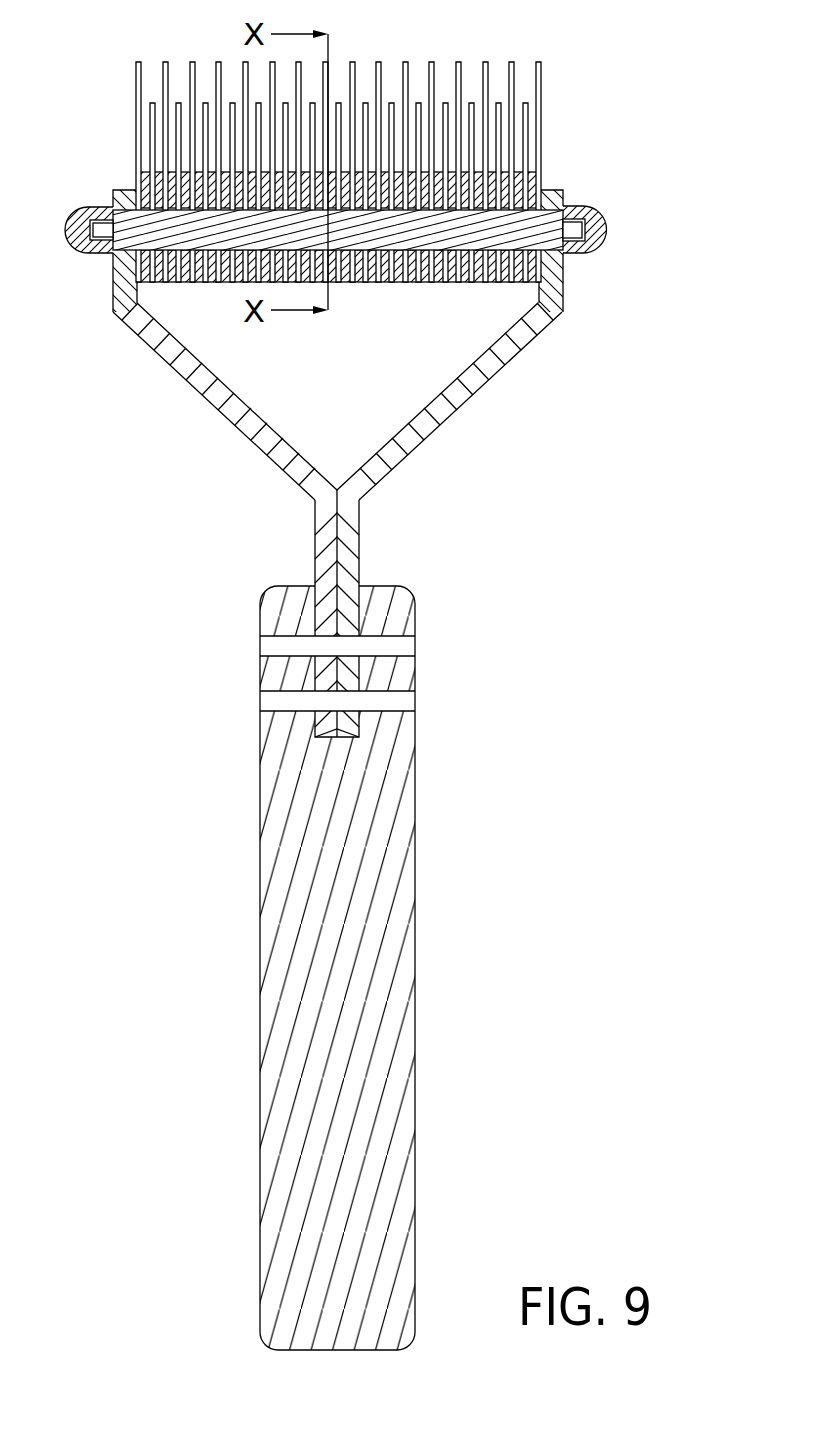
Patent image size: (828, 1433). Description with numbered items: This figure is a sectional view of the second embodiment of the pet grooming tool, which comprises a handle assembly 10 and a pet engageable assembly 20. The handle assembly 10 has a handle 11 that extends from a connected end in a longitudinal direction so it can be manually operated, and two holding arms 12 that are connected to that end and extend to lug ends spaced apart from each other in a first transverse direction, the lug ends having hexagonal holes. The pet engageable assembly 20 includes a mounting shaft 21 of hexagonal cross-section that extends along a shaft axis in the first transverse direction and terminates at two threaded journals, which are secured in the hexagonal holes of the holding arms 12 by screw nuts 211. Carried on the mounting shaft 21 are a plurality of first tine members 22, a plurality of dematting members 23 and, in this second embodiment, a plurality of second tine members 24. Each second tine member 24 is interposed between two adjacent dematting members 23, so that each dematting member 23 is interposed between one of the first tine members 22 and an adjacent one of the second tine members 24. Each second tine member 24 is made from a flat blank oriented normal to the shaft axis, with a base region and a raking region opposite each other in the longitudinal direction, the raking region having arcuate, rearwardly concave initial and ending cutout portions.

The handle assembly 10 is at (337, 829).
The handle 11 is at (411, 948).
The holding arms 12 is at (217, 401).
The pet engageable assembly 20 is at (372, 187).
The mounting shaft 21 is at (468, 237).
The screw nuts 211 is at (600, 222).
The first tine members 22 is at (152, 104).
The dematting members 23 is at (145, 178).
The second tine members 24 is at (137, 88).